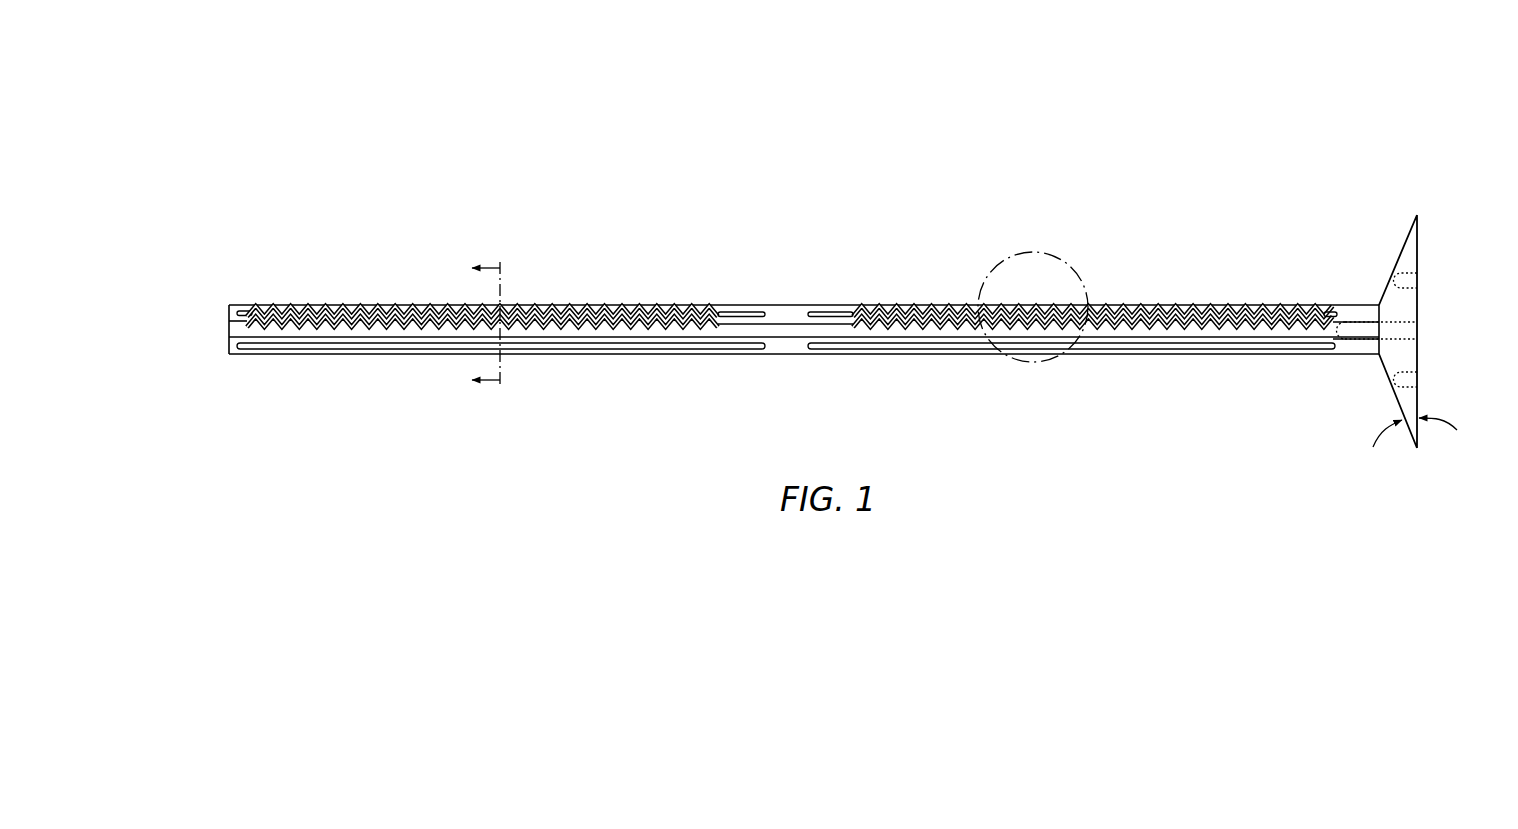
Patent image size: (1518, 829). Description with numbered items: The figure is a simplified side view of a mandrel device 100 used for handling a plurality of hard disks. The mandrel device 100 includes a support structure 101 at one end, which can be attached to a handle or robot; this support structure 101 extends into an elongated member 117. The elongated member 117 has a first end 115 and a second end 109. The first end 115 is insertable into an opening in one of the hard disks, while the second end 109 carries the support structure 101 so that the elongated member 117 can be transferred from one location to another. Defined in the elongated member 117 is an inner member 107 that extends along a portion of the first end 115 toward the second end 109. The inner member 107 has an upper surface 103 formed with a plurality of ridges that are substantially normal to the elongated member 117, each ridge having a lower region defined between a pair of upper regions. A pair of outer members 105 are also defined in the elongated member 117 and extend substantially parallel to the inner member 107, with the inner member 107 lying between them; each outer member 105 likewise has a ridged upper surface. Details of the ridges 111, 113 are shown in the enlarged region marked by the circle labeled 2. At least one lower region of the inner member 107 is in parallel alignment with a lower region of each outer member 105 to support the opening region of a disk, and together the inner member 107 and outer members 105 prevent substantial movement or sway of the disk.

The mandrel device 100 is at (1380, 92).
The support structure 101 is at (1417, 230).
The upper surface 103 is at (668, 295).
The outer members 105 is at (283, 328).
The inner member 107 is at (305, 310).
The second end 109 is at (1348, 358).
The ridges 111 is at (1138, 240).
The ridges 113 is at (467, 250).
The first end 115 is at (228, 330).
The elongated member 117 is at (760, 392).
The detail circle for FIG. 2 is at (1035, 362).